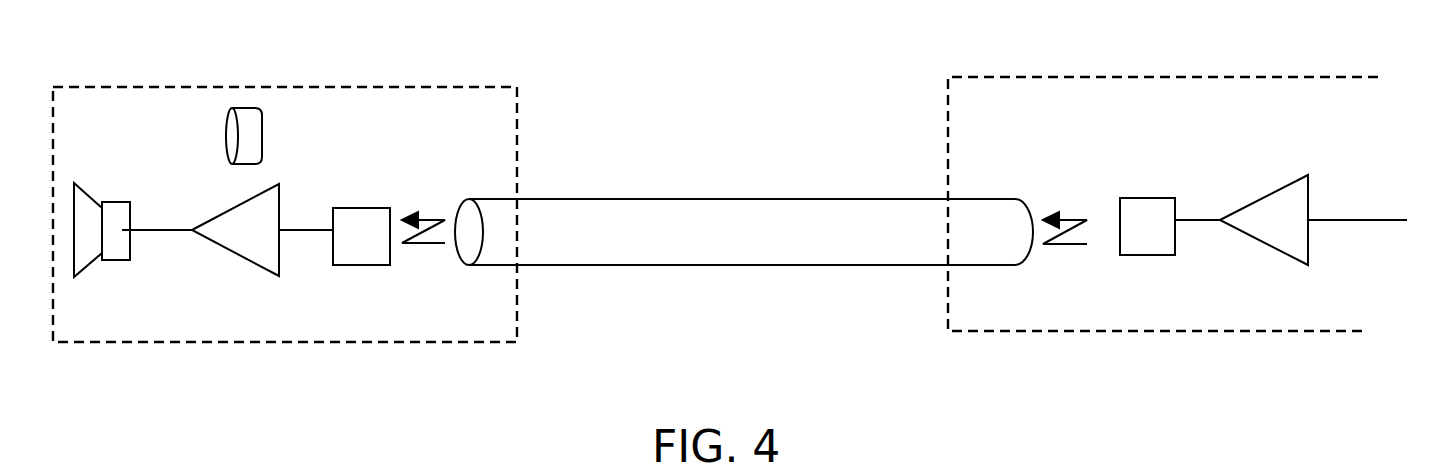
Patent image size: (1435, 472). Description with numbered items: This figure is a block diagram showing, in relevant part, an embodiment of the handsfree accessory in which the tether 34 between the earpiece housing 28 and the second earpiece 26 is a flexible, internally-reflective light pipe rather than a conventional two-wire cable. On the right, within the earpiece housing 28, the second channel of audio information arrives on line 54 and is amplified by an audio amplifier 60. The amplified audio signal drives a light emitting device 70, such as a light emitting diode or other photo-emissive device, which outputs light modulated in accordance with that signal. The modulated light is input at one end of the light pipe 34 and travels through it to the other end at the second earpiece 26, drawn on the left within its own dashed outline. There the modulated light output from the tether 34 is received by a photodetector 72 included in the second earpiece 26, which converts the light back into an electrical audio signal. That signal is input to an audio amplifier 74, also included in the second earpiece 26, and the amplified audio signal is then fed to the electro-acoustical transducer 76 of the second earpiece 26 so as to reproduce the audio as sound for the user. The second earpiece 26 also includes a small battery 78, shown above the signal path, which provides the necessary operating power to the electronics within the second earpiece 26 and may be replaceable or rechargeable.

The second earpiece 26 is at (200, 87).
The earpiece housing 28 is at (1077, 77).
The tether 34 is at (642, 199).
The line 54 is at (1330, 222).
The audio amplifier 60 is at (1287, 185).
The light emitting device 70 is at (1151, 197).
The photodetector 72 is at (352, 265).
The audio amplifier 74 is at (235, 252).
The electro-acoustical transducer 76 is at (90, 198).
The battery 78 is at (265, 135).